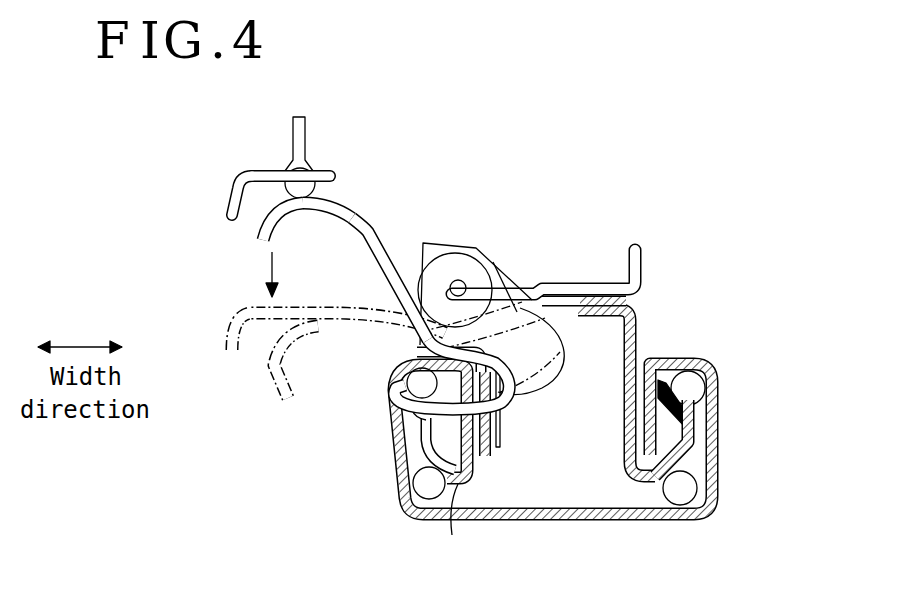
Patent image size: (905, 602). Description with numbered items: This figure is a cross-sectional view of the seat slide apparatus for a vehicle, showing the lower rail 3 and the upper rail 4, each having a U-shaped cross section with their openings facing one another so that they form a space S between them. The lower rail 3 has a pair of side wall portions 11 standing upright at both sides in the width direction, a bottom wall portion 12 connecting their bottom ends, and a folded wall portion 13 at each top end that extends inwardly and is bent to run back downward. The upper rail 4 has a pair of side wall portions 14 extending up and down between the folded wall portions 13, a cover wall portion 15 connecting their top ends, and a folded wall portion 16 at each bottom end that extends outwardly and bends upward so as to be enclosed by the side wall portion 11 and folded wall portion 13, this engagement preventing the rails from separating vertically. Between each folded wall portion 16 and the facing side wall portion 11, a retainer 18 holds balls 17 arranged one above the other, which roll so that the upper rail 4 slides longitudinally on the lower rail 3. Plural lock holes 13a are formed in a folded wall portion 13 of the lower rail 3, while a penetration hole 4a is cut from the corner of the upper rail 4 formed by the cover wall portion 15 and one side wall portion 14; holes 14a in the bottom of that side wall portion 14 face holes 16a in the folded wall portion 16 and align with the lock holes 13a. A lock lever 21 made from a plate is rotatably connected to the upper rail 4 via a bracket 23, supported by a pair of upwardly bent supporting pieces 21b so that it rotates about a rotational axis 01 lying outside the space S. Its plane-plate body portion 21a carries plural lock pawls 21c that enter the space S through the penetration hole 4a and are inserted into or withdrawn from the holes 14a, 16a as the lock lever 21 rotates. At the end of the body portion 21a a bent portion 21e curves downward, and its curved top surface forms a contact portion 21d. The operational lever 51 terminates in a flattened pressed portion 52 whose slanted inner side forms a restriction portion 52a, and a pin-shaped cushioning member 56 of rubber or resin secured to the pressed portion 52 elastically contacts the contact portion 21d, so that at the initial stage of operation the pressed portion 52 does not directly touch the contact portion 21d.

The lower rail 3 is at (546, 444).
The upper rail 4 is at (578, 435).
The penetration hole 4a is at (428, 348).
The side wall portion 11 is at (555, 469).
The bottom wall portion 12 is at (610, 520).
The folded wall portion 13 is at (626, 462).
The lock hole 13a is at (459, 523).
The side wall portion 14 is at (630, 400).
The hole 14a is at (501, 400).
The cover wall portion 15 is at (597, 296).
The folded wall portion 16 is at (700, 408).
The hole 16a is at (393, 422).
The ball 17 is at (688, 388).
The retainer 18 is at (700, 433).
The lock lever 21 is at (344, 290).
The body portion 21a is at (402, 255).
The supporting piece 21b is at (468, 252).
The lock pawl 21c is at (396, 385).
The contact portion 21d is at (325, 196).
The bent portion 21e is at (258, 240).
The bracket 23 is at (641, 262).
The rotational axis 01 is at (478, 288).
The operational lever 51 is at (250, 168).
The pressed portion 52 is at (232, 180).
The restriction portion 52a is at (235, 208).
The cushioning member 56 is at (308, 132).
The space S is at (600, 361).